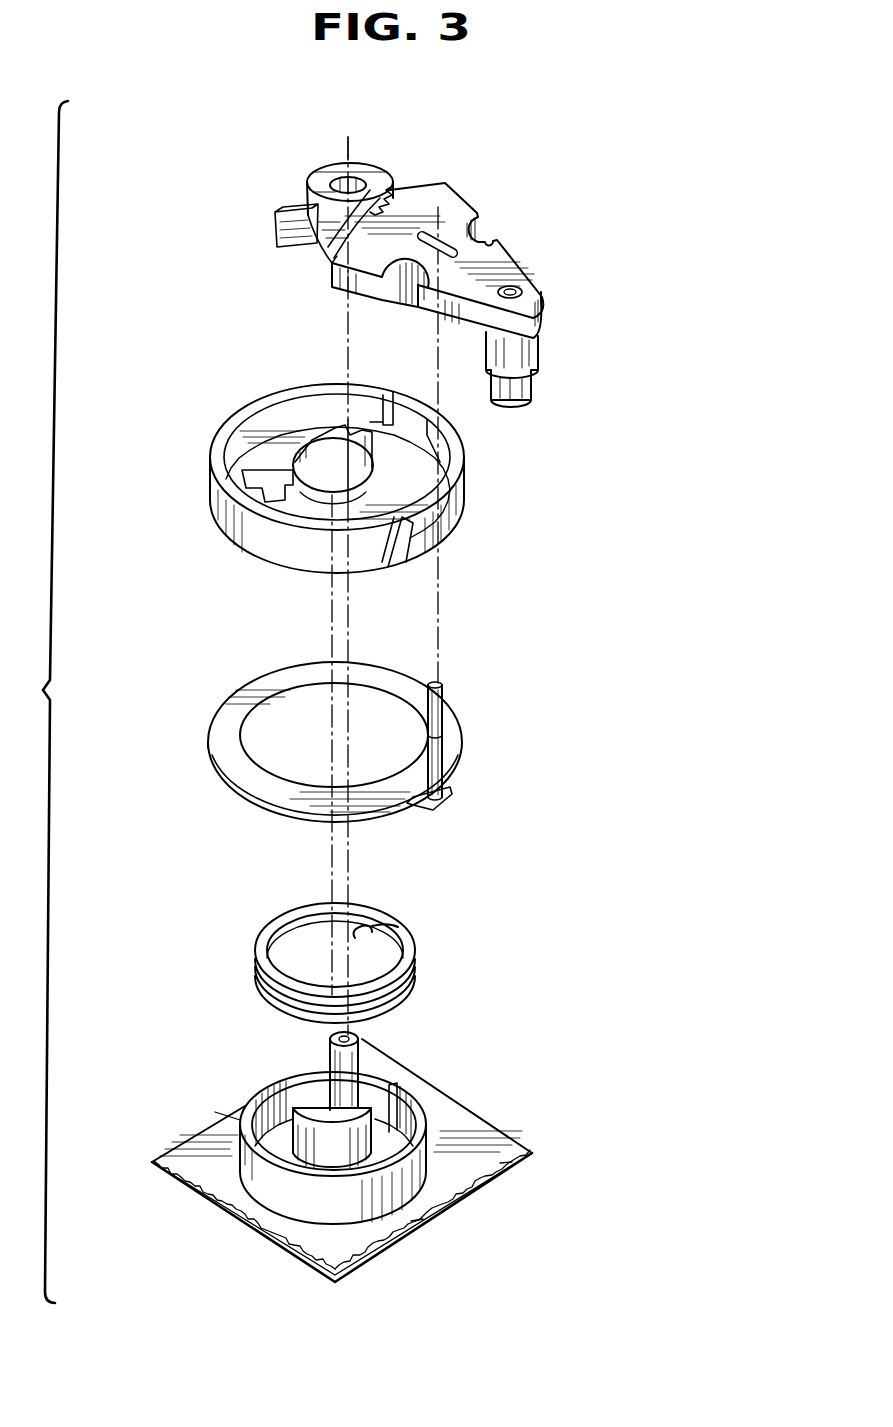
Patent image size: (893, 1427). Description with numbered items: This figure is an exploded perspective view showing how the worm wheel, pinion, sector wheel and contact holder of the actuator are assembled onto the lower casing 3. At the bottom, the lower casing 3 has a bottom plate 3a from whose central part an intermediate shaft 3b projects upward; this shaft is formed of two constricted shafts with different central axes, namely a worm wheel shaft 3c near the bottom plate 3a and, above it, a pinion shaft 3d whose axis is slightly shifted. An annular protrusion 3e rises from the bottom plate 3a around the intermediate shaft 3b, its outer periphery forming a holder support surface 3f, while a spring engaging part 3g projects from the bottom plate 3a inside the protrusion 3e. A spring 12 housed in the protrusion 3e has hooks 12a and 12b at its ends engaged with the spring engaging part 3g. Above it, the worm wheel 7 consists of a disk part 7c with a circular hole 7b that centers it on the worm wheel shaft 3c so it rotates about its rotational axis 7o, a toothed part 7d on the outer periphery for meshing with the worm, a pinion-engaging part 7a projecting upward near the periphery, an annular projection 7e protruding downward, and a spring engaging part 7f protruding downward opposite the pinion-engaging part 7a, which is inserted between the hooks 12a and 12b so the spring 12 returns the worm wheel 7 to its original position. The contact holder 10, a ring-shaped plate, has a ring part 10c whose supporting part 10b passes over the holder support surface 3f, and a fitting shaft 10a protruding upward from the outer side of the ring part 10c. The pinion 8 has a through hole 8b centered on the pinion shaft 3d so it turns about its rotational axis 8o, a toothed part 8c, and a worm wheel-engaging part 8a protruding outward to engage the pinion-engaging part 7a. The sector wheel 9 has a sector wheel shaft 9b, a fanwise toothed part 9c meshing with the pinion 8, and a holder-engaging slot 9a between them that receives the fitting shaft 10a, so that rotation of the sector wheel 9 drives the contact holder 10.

The lower casing 3 is at (483, 1120).
The bottom plate 3a is at (433, 1188).
The intermediate shaft 3b is at (367, 1037).
The worm wheel shaft 3c is at (270, 1175).
The pinion shaft 3d is at (277, 1080).
The annular protrusion 3e is at (225, 1115).
The holder support surface 3f is at (483, 1173).
The spring engaging part 3g is at (393, 1097).
The worm wheel 7 is at (257, 557).
The pinion-engaging part 7a is at (240, 470).
The circular hole 7b is at (327, 433).
The disk part 7c is at (327, 503).
The toothed part 7d is at (413, 560).
The annular projection 7e is at (390, 420).
The spring engaging part 7f is at (440, 470).
The rotational axis of the worm wheel 7o is at (297, 460).
The pinion 8 is at (315, 168).
The worm wheel-engaging part 8a is at (274, 232).
The through hole 8b is at (345, 177).
The toothed part 8c is at (377, 180).
The rotational axis of the pinion 8o is at (352, 140).
The sector wheel 9 is at (438, 178).
The holder-engaging slot 9a is at (445, 237).
The sector wheel shaft 9b is at (541, 350).
The toothed part 9c is at (332, 253).
The contact holder 10 is at (400, 808).
The fitting shaft 10a is at (443, 722).
The supporting part 10b is at (273, 690).
The ring part 10c is at (237, 768).
The spring 12 is at (408, 975).
The hook 12a is at (398, 927).
The hook 12b is at (355, 938).